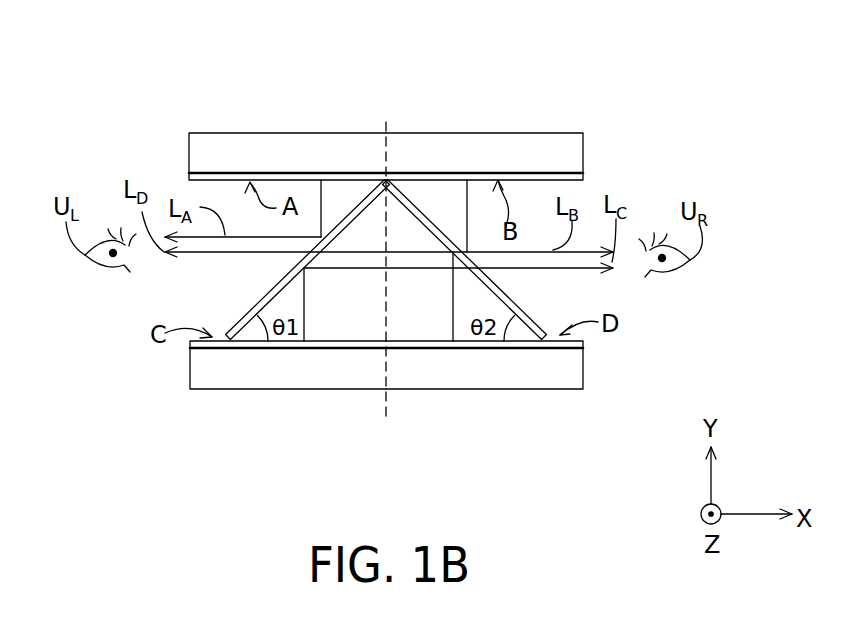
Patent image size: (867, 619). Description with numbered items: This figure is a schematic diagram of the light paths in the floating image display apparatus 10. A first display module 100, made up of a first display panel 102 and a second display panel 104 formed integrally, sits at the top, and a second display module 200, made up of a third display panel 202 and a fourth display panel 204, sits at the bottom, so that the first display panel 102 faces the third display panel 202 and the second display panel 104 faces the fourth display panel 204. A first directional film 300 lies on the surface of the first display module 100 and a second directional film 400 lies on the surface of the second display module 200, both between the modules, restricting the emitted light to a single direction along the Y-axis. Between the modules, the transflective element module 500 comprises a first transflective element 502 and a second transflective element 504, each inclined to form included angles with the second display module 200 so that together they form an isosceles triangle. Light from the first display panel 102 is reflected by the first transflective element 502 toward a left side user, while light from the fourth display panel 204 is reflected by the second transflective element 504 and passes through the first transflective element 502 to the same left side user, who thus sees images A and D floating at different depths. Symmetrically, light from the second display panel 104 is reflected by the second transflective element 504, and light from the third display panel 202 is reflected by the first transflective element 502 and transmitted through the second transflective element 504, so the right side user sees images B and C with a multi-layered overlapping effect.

The floating image display apparatus 10 is at (652, 441).
The first display module 100 is at (386, 99).
The first display panel 102 is at (262, 143).
The second display panel 104 is at (484, 129).
The second display module 200 is at (386, 424).
The third display panel 202 is at (252, 373).
The fourth display panel 204 is at (484, 392).
The first directional film 300 is at (583, 177).
The second directional film 400 is at (575, 342).
The transflective element module 500 is at (466, 195).
The first transflective element 502 is at (283, 284).
The second transflective element 504 is at (412, 204).